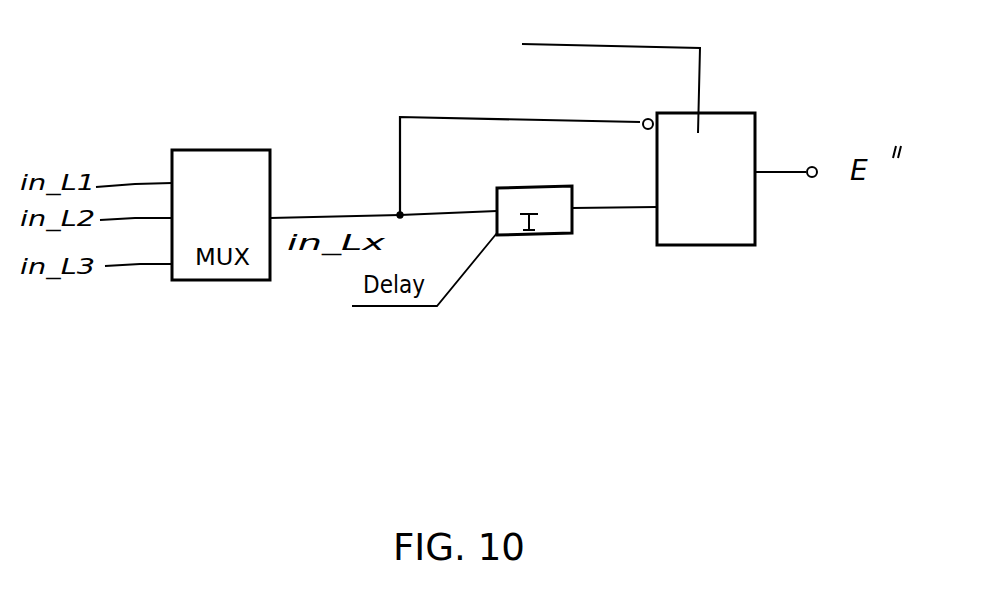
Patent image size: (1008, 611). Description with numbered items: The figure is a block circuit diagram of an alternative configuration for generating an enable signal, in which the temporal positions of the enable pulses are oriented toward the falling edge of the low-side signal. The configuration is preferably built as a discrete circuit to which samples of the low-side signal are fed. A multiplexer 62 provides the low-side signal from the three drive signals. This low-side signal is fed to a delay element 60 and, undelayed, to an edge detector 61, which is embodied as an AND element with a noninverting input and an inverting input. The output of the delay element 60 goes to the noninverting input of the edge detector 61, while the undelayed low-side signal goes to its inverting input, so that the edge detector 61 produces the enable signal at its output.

The delay element 60 is at (537, 235).
The edge detector 61 is at (705, 242).
The multiplexer 62 is at (221, 215).